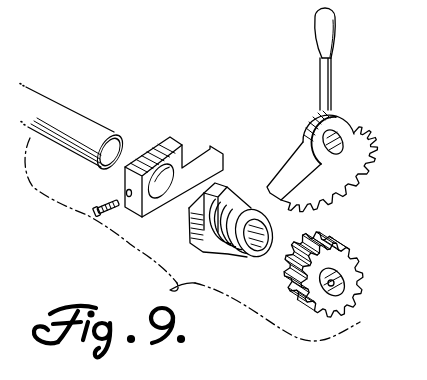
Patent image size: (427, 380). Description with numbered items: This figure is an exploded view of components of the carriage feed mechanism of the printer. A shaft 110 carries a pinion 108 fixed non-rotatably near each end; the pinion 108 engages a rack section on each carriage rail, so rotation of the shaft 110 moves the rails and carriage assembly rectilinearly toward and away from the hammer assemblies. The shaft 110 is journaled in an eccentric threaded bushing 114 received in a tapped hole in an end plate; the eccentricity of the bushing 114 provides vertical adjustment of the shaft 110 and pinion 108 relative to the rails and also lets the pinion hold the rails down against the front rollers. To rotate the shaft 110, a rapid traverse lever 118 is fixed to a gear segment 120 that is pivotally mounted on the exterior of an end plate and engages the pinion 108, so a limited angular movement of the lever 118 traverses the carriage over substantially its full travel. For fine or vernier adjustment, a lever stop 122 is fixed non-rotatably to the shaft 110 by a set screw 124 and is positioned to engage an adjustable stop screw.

The pinion 108 is at (360, 272).
The shaft 110 is at (97, 133).
The eccentric threaded bushing 114 is at (253, 254).
The rapid traverse lever 118 is at (331, 84).
The gear segment 120 is at (360, 143).
The lever stop 122 is at (205, 152).
The set screw 124 is at (108, 206).